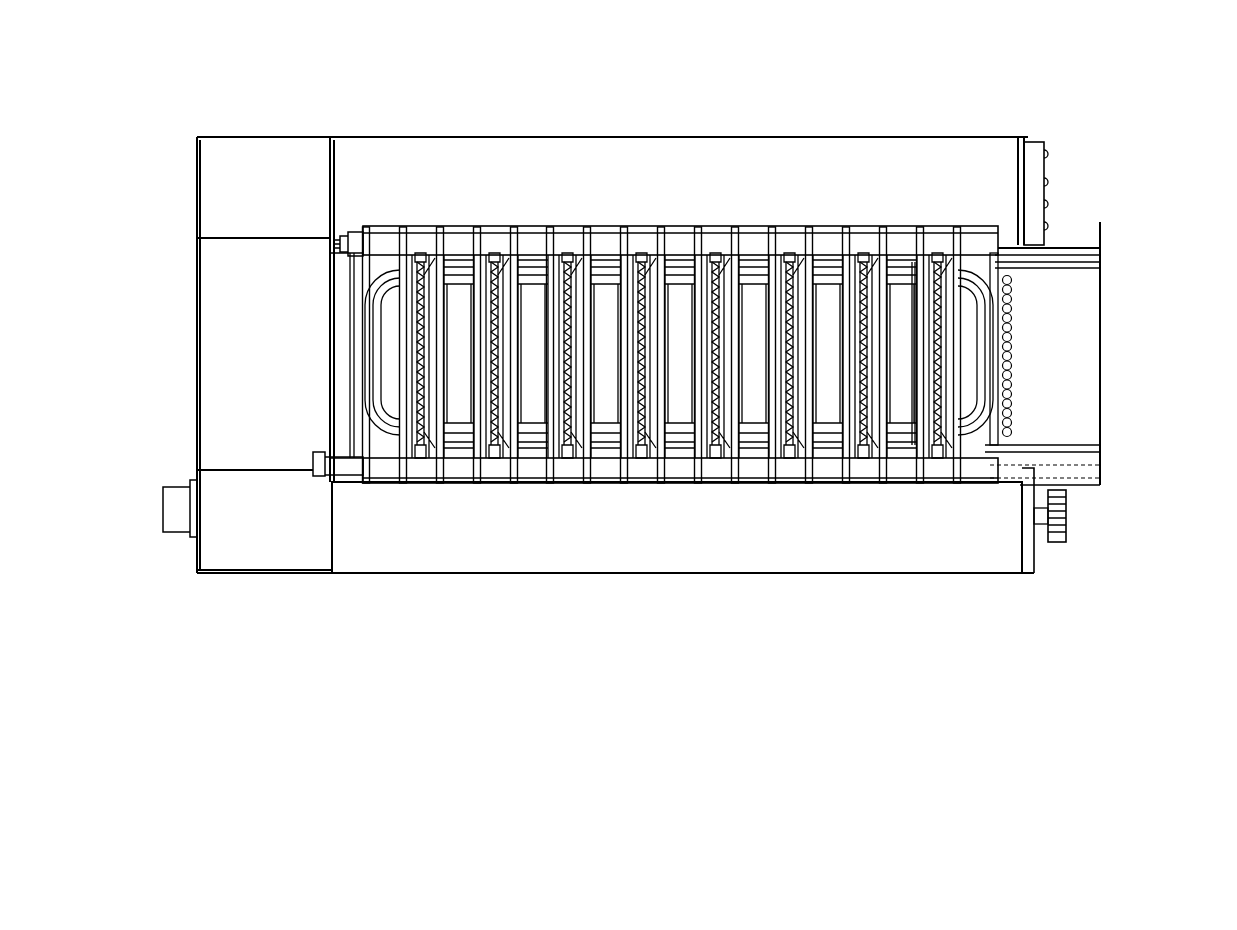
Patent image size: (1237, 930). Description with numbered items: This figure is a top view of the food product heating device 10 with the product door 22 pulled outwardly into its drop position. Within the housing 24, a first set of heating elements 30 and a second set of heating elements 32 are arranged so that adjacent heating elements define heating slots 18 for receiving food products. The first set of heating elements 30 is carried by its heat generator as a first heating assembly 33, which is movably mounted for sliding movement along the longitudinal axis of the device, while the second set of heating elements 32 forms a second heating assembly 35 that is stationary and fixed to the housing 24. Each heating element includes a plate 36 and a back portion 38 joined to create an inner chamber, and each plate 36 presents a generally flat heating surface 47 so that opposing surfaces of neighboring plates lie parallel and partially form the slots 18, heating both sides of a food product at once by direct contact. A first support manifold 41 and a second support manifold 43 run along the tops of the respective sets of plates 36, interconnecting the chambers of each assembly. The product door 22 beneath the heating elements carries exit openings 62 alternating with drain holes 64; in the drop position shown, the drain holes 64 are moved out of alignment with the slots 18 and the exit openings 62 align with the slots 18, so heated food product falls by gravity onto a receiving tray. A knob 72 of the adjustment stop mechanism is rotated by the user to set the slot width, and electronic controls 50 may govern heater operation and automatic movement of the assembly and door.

The food product heating device 10 is at (1012, 72).
The heating slot 18 is at (678, 256).
The product door 22 is at (1043, 308).
The housing 24 is at (385, 575).
The first set of heating elements 30 is at (735, 478).
The second set of heating elements 32 is at (628, 226).
The first heating assembly 33 is at (388, 471).
The second heating assembly 35 is at (437, 242).
The plate 36 is at (490, 258).
The back portion 38 is at (503, 253).
The first support manifold 41 is at (378, 248).
The second support manifold 43 is at (345, 466).
The heating surface 47 is at (910, 375).
The electronic controls 50 is at (1045, 165).
The exit openings 62 is at (888, 310).
The drain holes 64 is at (1022, 350).
The knob 72 is at (1066, 520).